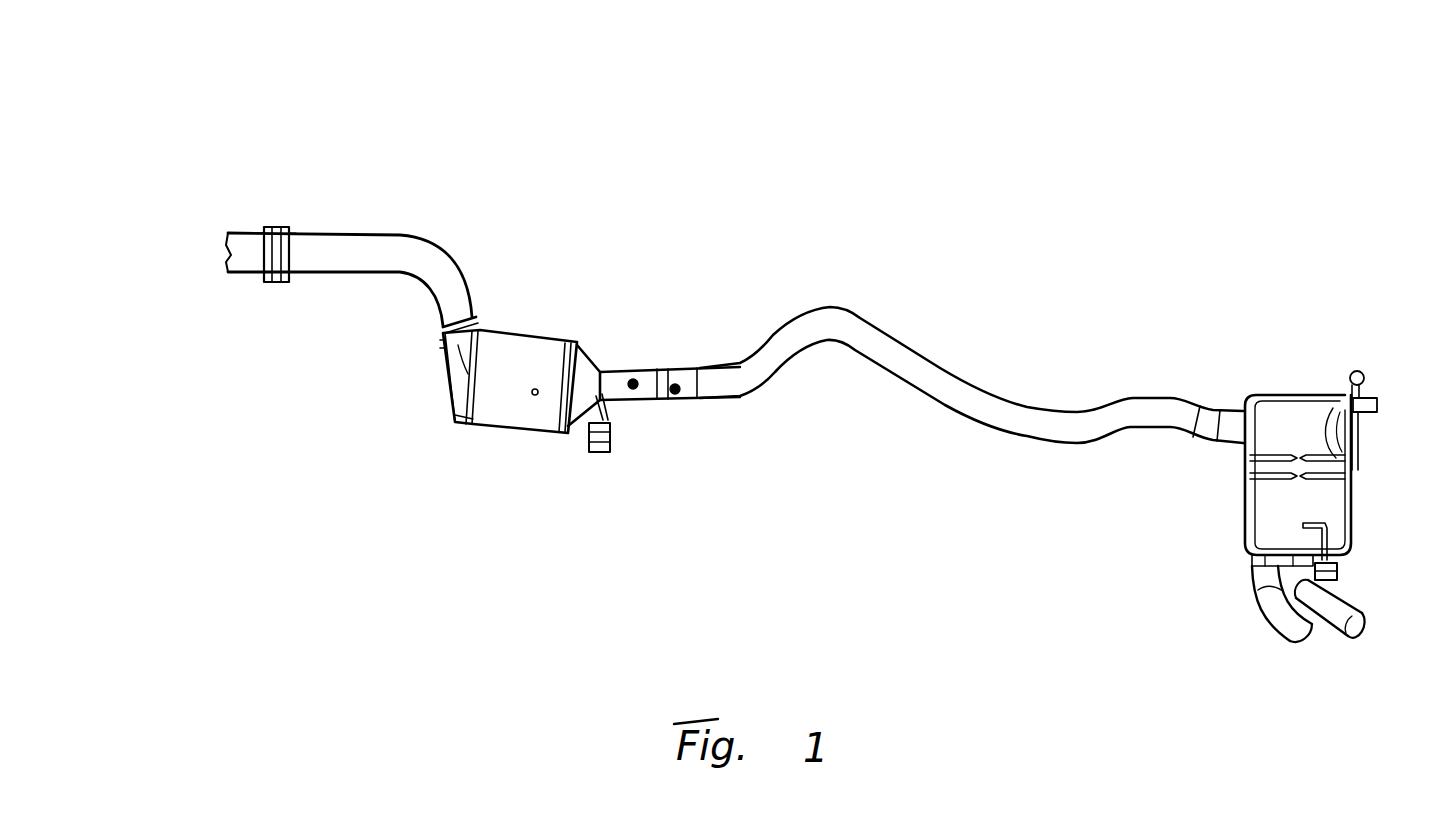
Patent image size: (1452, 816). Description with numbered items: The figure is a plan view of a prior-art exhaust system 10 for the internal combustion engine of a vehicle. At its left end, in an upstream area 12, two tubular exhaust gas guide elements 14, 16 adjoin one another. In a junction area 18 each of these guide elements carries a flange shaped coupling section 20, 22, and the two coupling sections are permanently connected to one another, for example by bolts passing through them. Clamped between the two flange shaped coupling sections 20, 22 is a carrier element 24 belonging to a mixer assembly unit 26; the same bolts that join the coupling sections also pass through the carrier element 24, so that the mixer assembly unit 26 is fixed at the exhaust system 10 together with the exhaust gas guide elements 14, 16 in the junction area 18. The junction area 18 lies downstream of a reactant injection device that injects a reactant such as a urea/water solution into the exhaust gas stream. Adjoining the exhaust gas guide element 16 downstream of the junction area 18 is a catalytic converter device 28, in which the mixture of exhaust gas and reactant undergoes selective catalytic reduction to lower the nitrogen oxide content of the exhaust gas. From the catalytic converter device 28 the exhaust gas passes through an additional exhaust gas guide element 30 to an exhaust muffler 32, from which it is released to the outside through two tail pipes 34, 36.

The exhaust system 10 is at (1086, 247).
The upstream area 12 is at (172, 225).
The exhaust gas guide element 14 is at (231, 274).
The exhaust gas guide element 16 is at (396, 234).
The junction area 18 is at (297, 308).
The flange shaped coupling section 20 is at (263, 228).
The flange shaped coupling section 22 is at (291, 227).
The carrier element 24 is at (275, 281).
The mixer assembly unit 26 is at (278, 203).
The catalytic converter device 28 is at (510, 405).
The additional exhaust gas guide element 30 is at (929, 361).
The exhaust muffler 32 is at (1263, 503).
The tail pipe 34 is at (1277, 628).
The tail pipe 36 is at (1343, 605).